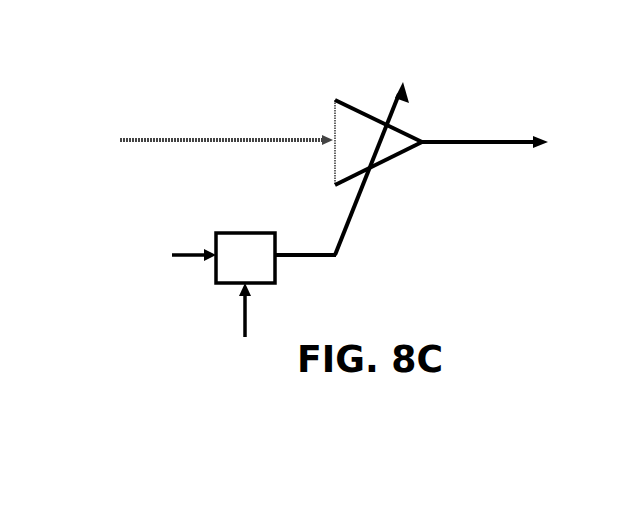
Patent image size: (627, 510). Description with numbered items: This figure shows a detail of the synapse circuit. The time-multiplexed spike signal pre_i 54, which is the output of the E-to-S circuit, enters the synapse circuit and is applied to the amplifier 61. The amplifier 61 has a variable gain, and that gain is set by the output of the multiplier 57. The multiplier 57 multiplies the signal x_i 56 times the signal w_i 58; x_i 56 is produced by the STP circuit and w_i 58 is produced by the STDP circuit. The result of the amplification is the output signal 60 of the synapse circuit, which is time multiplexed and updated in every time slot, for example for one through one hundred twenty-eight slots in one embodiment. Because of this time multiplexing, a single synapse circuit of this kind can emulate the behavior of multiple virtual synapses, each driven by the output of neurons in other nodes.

The pre_i output 54 is at (213, 140).
The x_i signal 56 is at (185, 255).
The multiplier 57 is at (258, 255).
The w_i signal 58 is at (242, 312).
The output signal 60 is at (475, 142).
The amplifier 61 is at (352, 120).